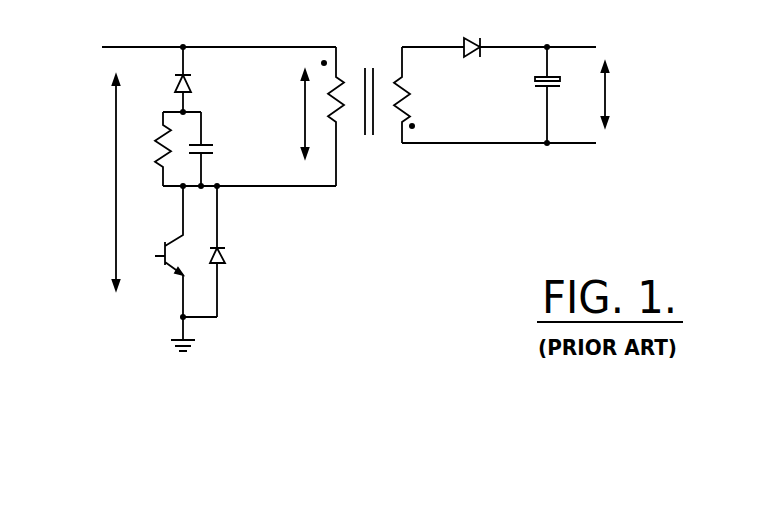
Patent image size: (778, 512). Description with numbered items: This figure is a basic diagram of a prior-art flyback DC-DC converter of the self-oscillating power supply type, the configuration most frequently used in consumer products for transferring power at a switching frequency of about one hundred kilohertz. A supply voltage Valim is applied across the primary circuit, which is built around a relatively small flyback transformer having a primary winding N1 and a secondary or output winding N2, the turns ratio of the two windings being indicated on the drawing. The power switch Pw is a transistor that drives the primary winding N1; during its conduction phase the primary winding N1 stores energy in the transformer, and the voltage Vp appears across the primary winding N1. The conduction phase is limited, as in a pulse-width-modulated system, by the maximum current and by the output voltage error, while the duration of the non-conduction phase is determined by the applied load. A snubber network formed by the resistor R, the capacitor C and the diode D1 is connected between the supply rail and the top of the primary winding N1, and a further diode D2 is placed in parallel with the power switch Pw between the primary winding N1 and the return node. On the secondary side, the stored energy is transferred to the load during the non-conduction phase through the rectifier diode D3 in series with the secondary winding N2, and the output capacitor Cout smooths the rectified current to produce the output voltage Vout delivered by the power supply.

The resistor R is at (152, 149).
The capacitor C is at (215, 149).
The power switching transistor Pw is at (165, 251).
The primary voltage Vp is at (285, 114).
The supply voltage Valim is at (80, 182).
The output voltage Vout is at (639, 94).
The transformer primary winding N1 is at (332, 116).
The transformer secondary winding N2 is at (371, 74).
The clamp diode D1 is at (183, 79).
The freewheel diode D2 is at (217, 251).
The output rectifier diode D3 is at (472, 47).
The output capacitor Cout is at (547, 95).